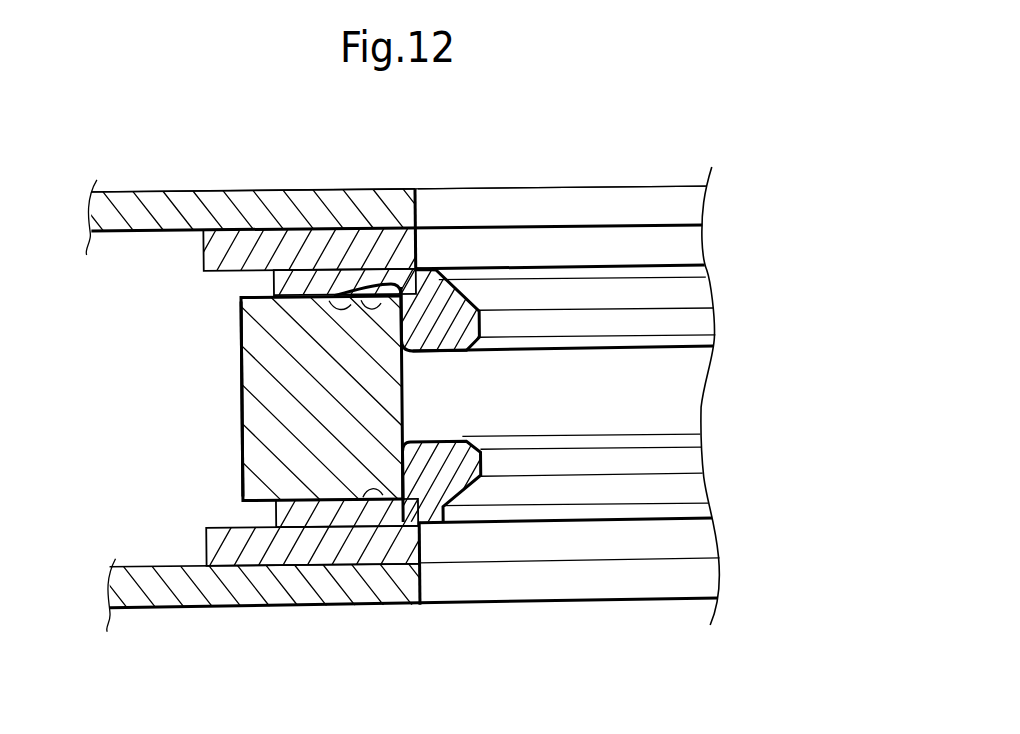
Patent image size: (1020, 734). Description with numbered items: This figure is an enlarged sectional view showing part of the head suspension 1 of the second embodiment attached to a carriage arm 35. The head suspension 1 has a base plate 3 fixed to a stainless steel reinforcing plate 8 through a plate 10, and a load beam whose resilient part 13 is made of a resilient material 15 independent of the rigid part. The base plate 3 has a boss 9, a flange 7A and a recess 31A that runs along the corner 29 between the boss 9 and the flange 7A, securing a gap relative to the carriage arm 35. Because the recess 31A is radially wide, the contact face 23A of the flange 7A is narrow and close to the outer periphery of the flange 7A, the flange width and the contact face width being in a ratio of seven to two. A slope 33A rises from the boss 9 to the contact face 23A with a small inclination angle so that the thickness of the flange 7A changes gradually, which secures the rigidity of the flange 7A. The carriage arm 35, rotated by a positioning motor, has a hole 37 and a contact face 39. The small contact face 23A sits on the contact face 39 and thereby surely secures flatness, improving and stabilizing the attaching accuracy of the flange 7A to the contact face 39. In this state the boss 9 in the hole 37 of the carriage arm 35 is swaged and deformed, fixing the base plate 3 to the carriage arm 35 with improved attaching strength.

The head suspension 1 is at (648, 186).
The base plate 3 is at (540, 278).
The flange 7A is at (274, 283).
The reinforcing plate 8 is at (588, 188).
The boss 9 is at (452, 354).
The plate 10 is at (703, 243).
The resilient part 13 is at (185, 190).
The resilient material 15 is at (132, 188).
The contact face 23A is at (268, 300).
The corner 29 is at (408, 310).
The recess 31A is at (372, 300).
The slope 33A is at (343, 300).
The carriage arm 35 is at (242, 388).
The hole 37 is at (433, 267).
The contact face 39 is at (318, 296).